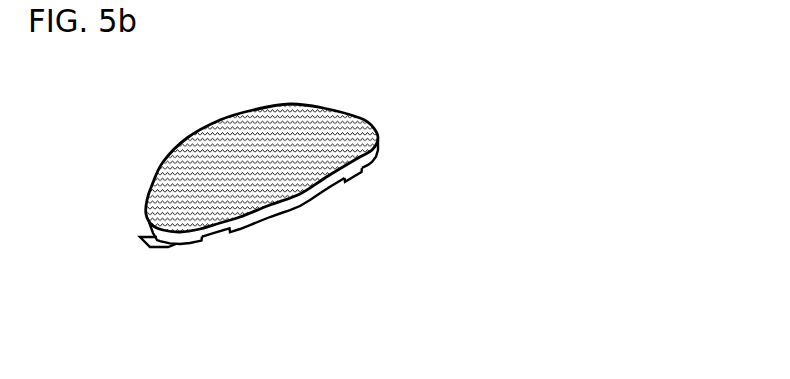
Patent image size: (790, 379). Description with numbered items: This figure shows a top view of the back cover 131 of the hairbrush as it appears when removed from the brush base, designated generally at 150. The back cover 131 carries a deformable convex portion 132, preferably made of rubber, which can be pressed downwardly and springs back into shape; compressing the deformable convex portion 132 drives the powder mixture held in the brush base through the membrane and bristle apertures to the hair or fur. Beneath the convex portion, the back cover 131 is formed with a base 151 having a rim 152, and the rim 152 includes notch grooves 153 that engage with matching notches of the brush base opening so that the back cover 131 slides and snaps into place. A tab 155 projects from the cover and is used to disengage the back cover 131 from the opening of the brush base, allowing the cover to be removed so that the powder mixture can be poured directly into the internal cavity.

The back cover 131 is at (317, 122).
The deformable convex portion 132 is at (243, 123).
The back cover in removed condition 150 is at (368, 197).
The base 151 is at (373, 152).
The rim 152 is at (302, 200).
The notch grooves 153 is at (220, 240).
The tab 155 is at (150, 245).